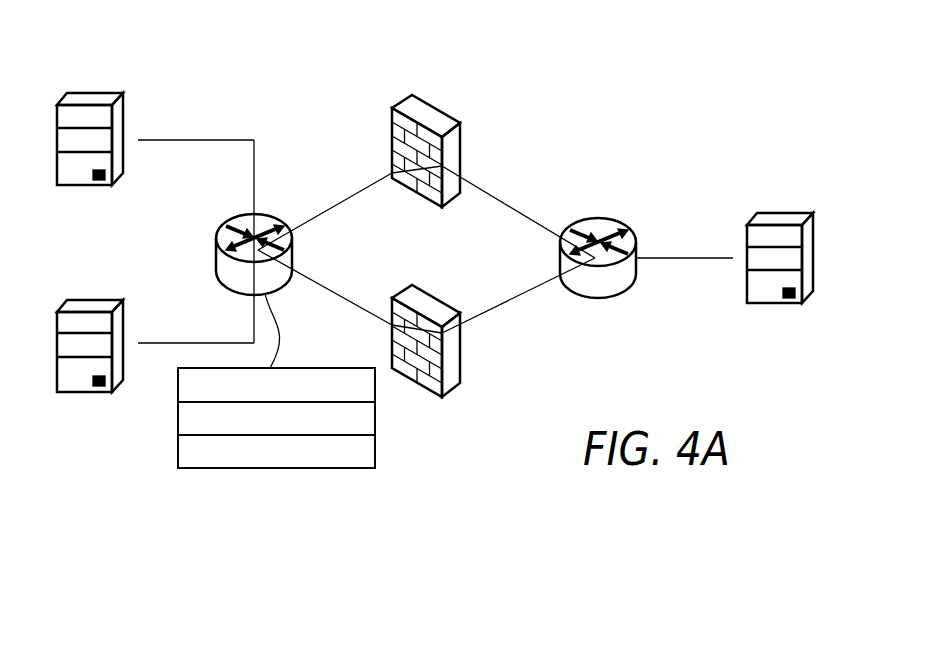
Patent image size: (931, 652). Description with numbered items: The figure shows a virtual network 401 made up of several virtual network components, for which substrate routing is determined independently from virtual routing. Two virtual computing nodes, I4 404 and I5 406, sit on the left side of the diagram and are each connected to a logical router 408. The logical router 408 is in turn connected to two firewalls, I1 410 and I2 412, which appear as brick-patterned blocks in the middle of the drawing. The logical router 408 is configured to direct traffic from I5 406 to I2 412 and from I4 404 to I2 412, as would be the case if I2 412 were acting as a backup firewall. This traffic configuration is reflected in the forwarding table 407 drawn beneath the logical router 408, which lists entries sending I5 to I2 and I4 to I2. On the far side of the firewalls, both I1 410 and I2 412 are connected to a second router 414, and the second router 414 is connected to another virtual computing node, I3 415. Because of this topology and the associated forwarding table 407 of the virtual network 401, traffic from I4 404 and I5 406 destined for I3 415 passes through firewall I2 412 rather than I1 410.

The virtual network 401 is at (446, 175).
The virtual computing node I4 404 is at (112, 307).
The virtual computing node I5 406 is at (112, 100).
The forwarding table 407 is at (375, 455).
The logical router 408 is at (268, 215).
The firewall I1 410 is at (440, 299).
The firewall I2 412 is at (440, 110).
The second router 414 is at (612, 218).
The virtual computing node I3 415 is at (800, 219).